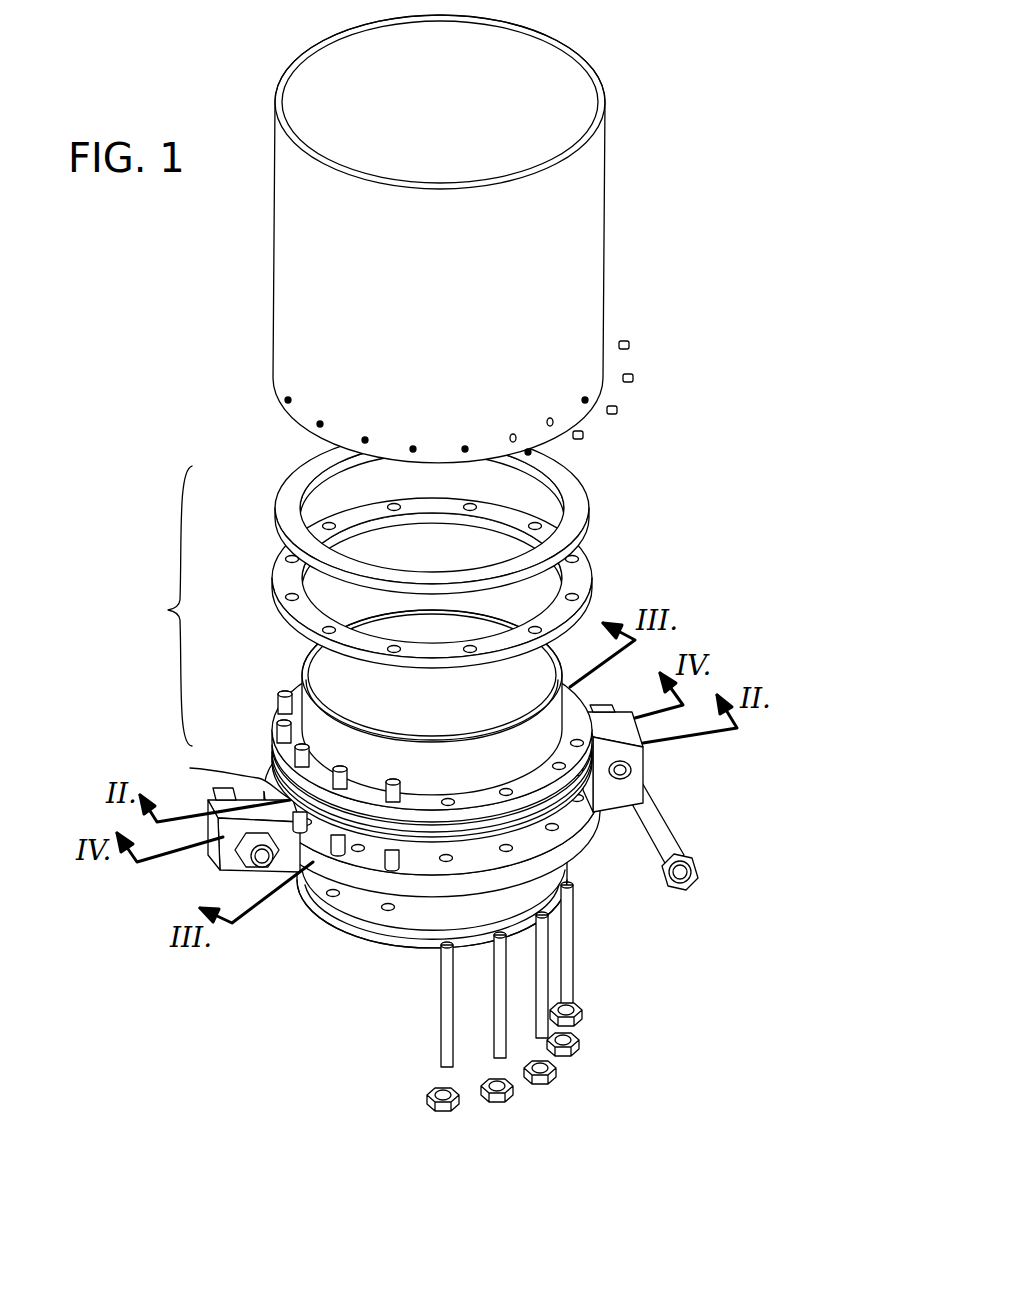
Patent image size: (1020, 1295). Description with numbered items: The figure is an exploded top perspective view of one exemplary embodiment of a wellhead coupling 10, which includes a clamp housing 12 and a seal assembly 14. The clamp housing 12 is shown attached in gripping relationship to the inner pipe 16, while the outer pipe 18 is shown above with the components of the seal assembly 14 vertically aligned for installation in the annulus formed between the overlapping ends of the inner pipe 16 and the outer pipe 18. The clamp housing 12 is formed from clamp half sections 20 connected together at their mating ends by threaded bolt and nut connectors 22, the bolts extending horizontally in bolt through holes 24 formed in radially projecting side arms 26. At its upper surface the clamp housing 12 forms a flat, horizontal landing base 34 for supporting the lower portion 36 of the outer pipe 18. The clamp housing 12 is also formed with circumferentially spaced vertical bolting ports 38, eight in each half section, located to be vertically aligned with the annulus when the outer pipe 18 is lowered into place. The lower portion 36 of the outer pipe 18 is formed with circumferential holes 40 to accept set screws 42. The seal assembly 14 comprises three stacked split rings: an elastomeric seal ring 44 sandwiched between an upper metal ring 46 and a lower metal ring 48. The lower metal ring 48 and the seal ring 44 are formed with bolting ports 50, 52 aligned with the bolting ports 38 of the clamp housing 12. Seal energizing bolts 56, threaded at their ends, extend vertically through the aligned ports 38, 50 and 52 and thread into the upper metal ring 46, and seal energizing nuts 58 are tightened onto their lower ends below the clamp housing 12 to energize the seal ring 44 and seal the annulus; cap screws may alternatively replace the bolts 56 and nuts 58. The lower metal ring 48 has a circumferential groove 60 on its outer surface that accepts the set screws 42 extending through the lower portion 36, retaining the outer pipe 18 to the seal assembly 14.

The wellhead coupling 10 is at (148, 716).
The clamp housing 12 is at (385, 884).
The seal assembly 14 is at (163, 606).
The inner pipe 16 is at (415, 944).
The outer pipe 18 is at (583, 212).
The clamp half sections 20 is at (330, 958).
The threaded bolt and nut connectors 22 is at (658, 828).
The bolt through holes 24 is at (631, 771).
The radially projecting side arms 26 is at (630, 742).
The landing base 34 is at (566, 815).
The lower portion of the outer pipe 36 is at (282, 393).
The bolting ports 38 is at (446, 860).
The circumferential holes 40 is at (580, 398).
The set screws 42 is at (635, 345).
The elastomeric seal ring 44 is at (282, 578).
The upper metal ring 46 is at (282, 512).
The lower metal ring 48 is at (281, 720).
The bolting ports 50 is at (502, 791).
The bolting ports 52 is at (470, 653).
The seal energizing bolts 56 is at (543, 988).
The seal energizing nuts 58 is at (577, 1050).
The circumferential groove 60 is at (310, 795).